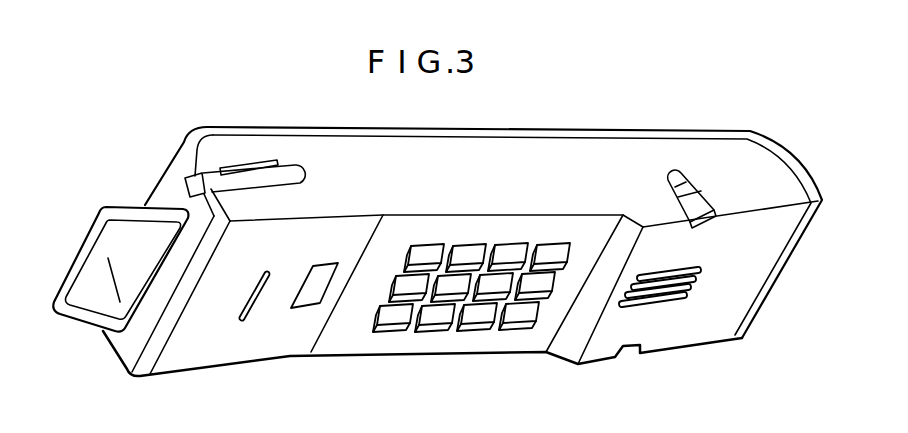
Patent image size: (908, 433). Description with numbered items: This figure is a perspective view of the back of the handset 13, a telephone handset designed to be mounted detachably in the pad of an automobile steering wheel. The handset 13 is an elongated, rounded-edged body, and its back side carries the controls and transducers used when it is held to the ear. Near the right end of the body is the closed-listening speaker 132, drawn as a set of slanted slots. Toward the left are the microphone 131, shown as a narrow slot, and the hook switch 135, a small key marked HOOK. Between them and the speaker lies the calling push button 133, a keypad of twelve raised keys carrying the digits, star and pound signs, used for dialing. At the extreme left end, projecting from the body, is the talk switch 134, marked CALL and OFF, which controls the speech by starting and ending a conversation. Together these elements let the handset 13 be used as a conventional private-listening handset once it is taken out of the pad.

The handset 13 is at (681, 132).
The microphone 131 is at (244, 320).
The closed-listening speaker 132 is at (663, 303).
The calling push button 133 is at (455, 329).
The talk switch 134 is at (111, 208).
The hook switch 135 is at (306, 309).